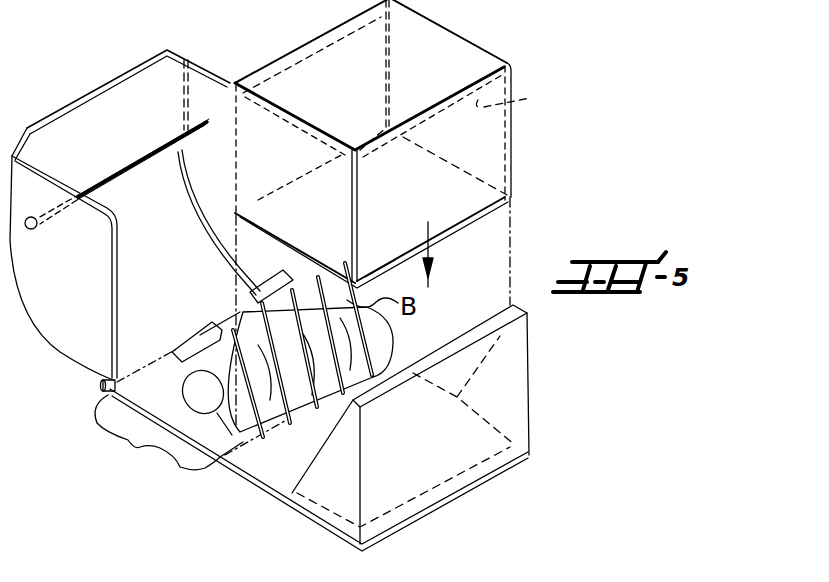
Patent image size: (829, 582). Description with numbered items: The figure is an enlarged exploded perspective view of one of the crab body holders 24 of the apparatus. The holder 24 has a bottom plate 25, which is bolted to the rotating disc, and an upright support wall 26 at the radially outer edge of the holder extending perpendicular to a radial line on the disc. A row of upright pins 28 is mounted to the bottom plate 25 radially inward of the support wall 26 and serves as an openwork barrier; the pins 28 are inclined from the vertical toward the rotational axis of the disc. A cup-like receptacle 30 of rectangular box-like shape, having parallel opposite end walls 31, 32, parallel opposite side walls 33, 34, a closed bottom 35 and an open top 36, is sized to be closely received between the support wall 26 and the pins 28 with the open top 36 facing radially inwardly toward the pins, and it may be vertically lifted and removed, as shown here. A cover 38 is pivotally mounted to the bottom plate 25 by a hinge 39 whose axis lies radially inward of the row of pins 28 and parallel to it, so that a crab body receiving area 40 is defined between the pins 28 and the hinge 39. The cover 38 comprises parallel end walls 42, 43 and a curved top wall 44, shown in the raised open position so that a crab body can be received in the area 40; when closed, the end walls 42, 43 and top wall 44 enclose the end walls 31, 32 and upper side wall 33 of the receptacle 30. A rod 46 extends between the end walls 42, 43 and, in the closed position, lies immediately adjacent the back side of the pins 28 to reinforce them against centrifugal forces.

The holder 24 is at (540, 154).
The bottom plate 25 is at (178, 403).
The upright support wall 26 is at (457, 434).
The upright pins 28 is at (295, 290).
The receptacle 30 is at (473, 38).
The end wall 31 is at (332, 213).
The end wall 32 is at (520, 101).
The side wall 33 is at (360, 89).
The side wall 34 is at (369, 250).
The closed bottom 35 is at (440, 195).
The open top 36 is at (282, 63).
The cover 38 is at (66, 100).
The hinge 39 is at (103, 387).
The crab body receiving area 40 is at (130, 443).
The end wall 42 is at (74, 273).
The end wall 43 is at (228, 113).
The curved top wall 44 is at (167, 231).
The rod 46 is at (141, 160).